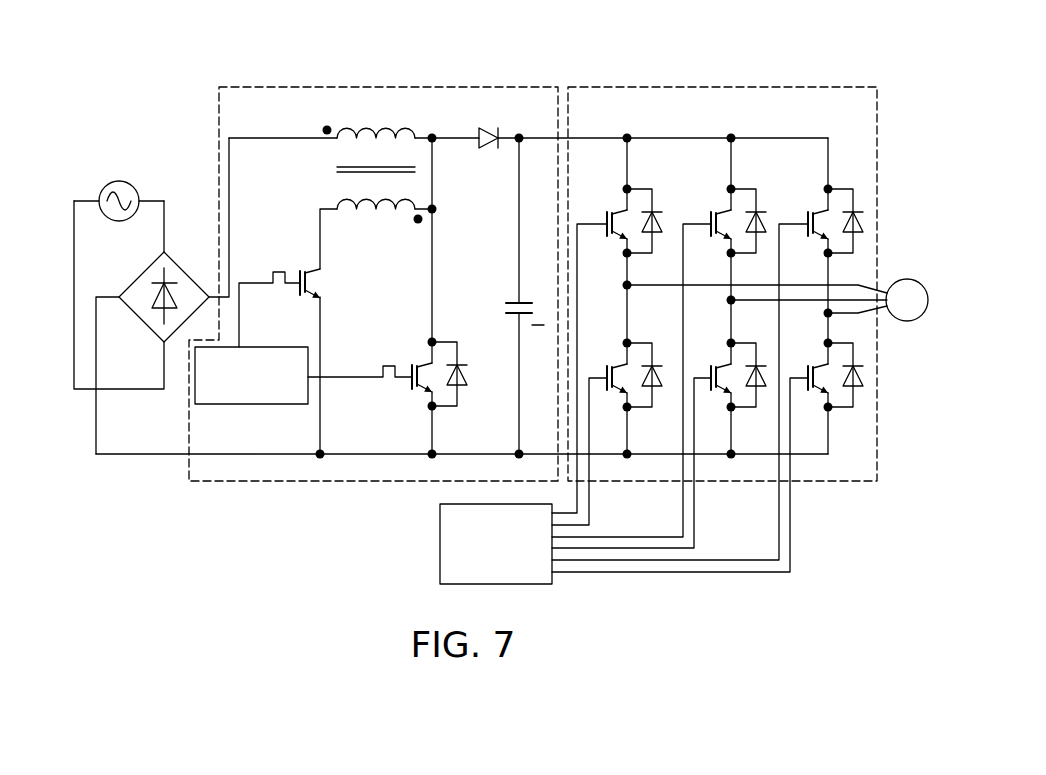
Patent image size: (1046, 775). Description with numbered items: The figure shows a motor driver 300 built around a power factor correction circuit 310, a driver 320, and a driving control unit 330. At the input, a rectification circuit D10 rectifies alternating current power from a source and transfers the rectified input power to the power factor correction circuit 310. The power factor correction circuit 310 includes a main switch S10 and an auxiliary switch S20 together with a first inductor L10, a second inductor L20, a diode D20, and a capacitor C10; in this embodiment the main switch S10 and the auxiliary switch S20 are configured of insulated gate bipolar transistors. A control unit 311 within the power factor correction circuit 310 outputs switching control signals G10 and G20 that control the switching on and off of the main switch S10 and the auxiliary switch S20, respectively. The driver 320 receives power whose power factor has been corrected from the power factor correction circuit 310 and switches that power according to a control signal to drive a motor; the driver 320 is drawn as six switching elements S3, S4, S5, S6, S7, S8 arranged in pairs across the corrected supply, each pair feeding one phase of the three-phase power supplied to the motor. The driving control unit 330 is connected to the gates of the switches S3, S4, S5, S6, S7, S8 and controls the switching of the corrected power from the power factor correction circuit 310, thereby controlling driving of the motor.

The motor driver 300 is at (179, 70).
The power factor correction circuit 310 is at (388, 87).
The control unit 311 is at (239, 405).
The driver 320 is at (720, 87).
The driving control unit 330 is at (440, 546).
The rectification circuit D10 is at (151, 296).
The first inductor L10 is at (369, 135).
The second inductor L20 is at (376, 234).
The diode D20 is at (489, 123).
The capacitor C10 is at (507, 296).
The main switch S10 is at (424, 378).
The auxiliary switch S20 is at (332, 364).
The switching control signal G10 is at (360, 357).
The switching control signal G20 is at (270, 296).
The inverter switch S3 is at (607, 348).
The inverter switch S4 is at (607, 431).
The inverter switch S5 is at (659, 360).
The inverter switch S6 is at (659, 442).
The inverter switch S7 is at (707, 371).
The inverter switch S8 is at (707, 454).